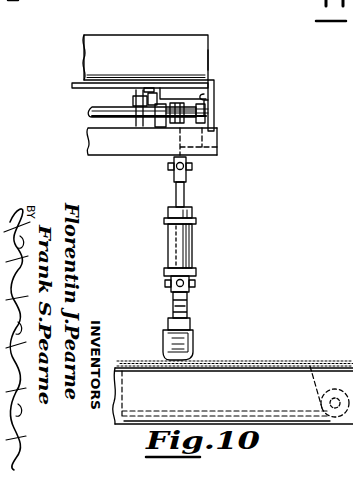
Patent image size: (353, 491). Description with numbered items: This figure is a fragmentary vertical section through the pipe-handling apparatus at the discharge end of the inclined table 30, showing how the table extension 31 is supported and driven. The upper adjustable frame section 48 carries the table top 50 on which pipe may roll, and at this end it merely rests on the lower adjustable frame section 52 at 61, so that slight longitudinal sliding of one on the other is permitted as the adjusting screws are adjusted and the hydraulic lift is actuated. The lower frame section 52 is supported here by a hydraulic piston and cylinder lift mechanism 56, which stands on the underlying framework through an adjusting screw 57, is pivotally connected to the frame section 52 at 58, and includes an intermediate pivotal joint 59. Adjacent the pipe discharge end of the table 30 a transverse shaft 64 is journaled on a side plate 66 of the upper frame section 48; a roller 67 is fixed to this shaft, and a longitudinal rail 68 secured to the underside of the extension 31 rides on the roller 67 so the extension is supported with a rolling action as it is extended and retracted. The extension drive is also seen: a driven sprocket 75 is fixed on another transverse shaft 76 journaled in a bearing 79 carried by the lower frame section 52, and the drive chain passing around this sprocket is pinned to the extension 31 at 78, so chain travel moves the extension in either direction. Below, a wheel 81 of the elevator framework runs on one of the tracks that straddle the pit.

The inclined table 30 is at (219, 60).
The table extension 31 is at (61, 87).
The upper adjustable frame section 48 is at (208, 99).
The table top 50 is at (86, 46).
The lower adjustable frame section 52 is at (219, 150).
The hydraulic piston and cylinder lift mechanism 56 is at (160, 241).
The adjusting screw 57 is at (188, 300).
The pivotal connection 58 is at (190, 166).
The intermediate pivotal joint 59 is at (192, 284).
The resting point 61 is at (216, 130).
The transverse shaft 64 is at (92, 132).
The side plate 66 is at (216, 104).
The roller 67 is at (157, 127).
The longitudinal rail 68 is at (177, 102).
The driven sprocket 75 is at (146, 102).
The transverse shaft 76 is at (104, 106).
The chain pin connection 78 is at (151, 83).
The bearing 79 is at (170, 127).
The wheel 81 is at (322, 402).